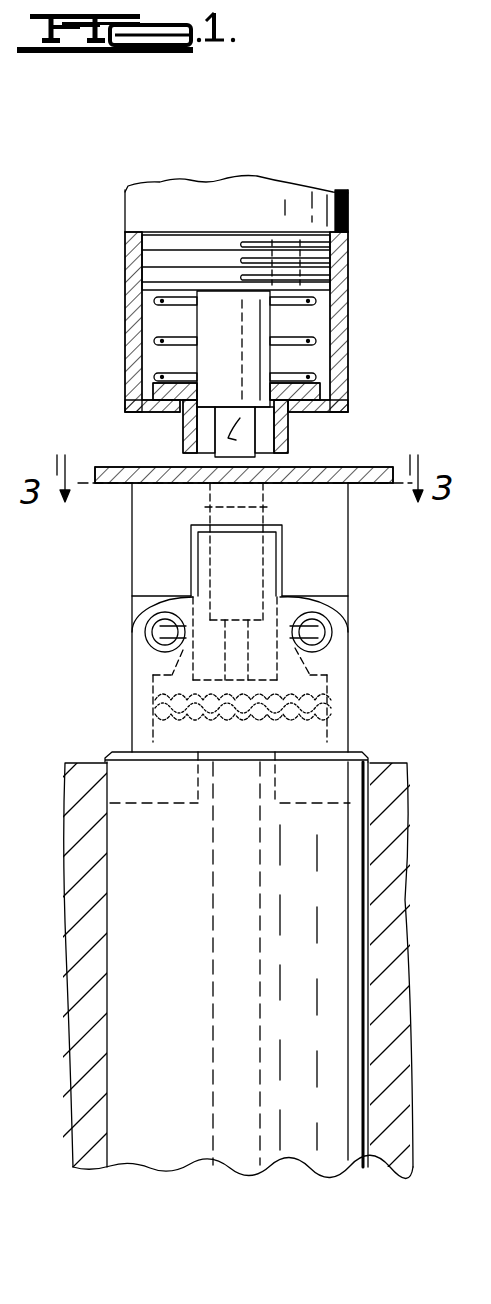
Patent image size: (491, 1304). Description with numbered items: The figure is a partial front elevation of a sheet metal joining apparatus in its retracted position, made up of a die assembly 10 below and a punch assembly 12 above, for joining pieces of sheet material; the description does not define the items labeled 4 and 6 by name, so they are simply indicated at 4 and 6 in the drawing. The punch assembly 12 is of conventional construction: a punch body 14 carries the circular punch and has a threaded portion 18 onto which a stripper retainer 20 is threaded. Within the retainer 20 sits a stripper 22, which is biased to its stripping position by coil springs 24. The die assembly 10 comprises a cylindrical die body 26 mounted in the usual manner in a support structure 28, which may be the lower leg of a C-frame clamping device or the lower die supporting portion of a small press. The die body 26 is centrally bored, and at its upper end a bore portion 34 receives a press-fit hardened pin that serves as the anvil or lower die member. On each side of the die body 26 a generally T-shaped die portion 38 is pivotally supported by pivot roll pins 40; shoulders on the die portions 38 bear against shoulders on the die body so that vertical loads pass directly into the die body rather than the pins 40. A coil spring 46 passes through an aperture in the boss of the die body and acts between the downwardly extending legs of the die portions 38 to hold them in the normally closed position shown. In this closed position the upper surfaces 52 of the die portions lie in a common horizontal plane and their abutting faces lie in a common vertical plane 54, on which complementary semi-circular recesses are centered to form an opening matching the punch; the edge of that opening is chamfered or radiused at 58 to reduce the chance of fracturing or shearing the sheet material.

The plate 4 is at (330, 467).
The plate edge 6 is at (365, 483).
The die assembly 10 is at (100, 724).
The punch assembly 12 is at (378, 258).
The punch body 14 is at (266, 185).
The threaded portion 18 is at (173, 255).
The stripper retainer 20 is at (350, 304).
The stripper 22 is at (182, 430).
The coil springs 24 is at (142, 337).
The die body 26 is at (320, 1026).
The support structure 28 is at (398, 963).
The bore portion 34 is at (284, 532).
The die portion 38 is at (150, 563).
The pivot roll pins 40 is at (146, 632).
The coil spring 46 is at (352, 672).
The upper surfaces 52 is at (152, 485).
The vertical plane 54 is at (240, 508).
The chamfered or radiused edge 58 is at (235, 485).